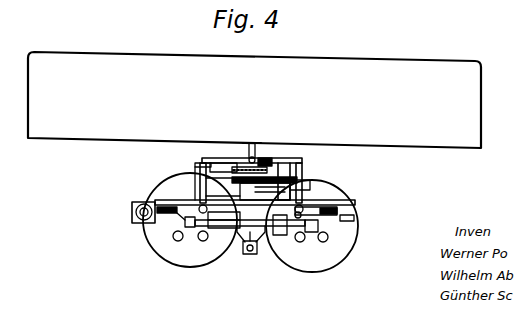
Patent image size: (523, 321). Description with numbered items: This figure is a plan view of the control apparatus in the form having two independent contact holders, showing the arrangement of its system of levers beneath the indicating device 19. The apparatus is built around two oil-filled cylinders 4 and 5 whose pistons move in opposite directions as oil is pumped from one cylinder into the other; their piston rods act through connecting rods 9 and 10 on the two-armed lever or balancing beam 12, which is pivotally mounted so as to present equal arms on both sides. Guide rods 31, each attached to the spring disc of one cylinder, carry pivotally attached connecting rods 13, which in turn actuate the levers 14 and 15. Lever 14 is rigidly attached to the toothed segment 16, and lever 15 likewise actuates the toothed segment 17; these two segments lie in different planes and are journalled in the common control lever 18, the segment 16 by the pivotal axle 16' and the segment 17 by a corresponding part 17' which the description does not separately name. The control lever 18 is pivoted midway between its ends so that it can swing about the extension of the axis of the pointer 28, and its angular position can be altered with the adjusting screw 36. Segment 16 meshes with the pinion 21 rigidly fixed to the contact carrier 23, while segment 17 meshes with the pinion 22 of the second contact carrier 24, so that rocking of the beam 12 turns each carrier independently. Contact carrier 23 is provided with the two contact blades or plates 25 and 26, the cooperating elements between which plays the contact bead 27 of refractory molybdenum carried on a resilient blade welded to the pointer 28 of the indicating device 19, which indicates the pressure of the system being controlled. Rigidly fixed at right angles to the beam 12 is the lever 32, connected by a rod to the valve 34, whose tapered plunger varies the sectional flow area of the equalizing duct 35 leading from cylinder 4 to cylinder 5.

The indicating device 19 is at (473, 95).
The cylinder 4 is at (201, 262).
The cylinder 5 is at (352, 238).
The connecting rod 9 is at (191, 226).
The connecting rod 10 is at (313, 232).
The two-armed lever or balancing beam 12 is at (222, 232).
The connecting rod 13 is at (168, 214).
The lever 14 is at (189, 207).
The lever 15 is at (338, 212).
The toothed segment 16 is at (227, 158).
The pivotal axle 16' is at (156, 179).
The toothed segment 17 is at (264, 189).
The slide bar end 17' is at (327, 173).
The control lever 18 is at (190, 200).
The pinion 21 is at (251, 155).
The pinion 22 is at (248, 182).
The contact carrier 23 is at (192, 180).
The contact carrier 24 is at (305, 192).
The contact blade 25 is at (206, 162).
The contact blade 26 is at (296, 160).
The contact bead 27 is at (260, 158).
The pointer 28 is at (242, 150).
The guide rod 31 is at (178, 241).
The lever 32 is at (255, 246).
The valve 34 is at (259, 250).
The equalizing passage or duct 35 is at (238, 252).
The adjusting screw 36 is at (133, 226).